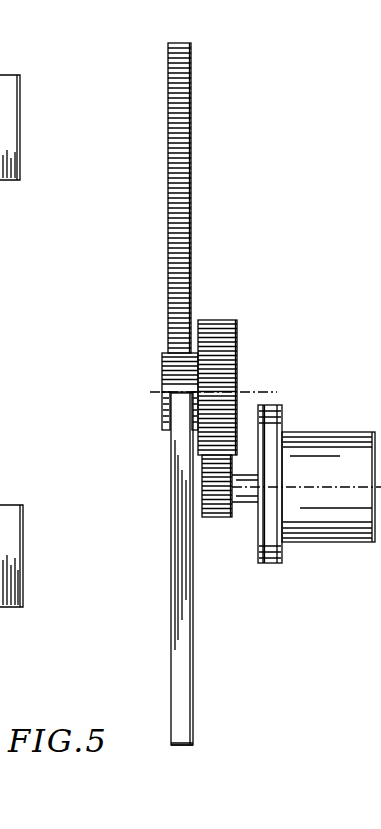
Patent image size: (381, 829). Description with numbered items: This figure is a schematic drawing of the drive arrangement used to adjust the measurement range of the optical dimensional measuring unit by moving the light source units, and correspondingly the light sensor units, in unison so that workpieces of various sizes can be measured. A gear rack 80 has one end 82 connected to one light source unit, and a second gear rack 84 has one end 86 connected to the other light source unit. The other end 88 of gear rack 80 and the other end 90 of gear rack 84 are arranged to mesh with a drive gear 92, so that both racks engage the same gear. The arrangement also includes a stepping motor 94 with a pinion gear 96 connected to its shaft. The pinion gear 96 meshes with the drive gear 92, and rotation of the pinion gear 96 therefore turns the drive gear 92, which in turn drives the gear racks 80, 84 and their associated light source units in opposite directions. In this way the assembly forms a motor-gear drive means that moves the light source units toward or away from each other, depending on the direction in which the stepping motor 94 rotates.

The gear rack 80 is at (235, 246).
The end of gear rack 82 is at (192, 84).
The gear rack 84 is at (197, 659).
The end of gear rack 86 is at (197, 742).
The other end of gear rack 88 is at (168, 343).
The other end of gear rack 90 is at (162, 443).
The drive gear 92 is at (238, 357).
The stepping motor 94 is at (282, 562).
The pinion gear 96 is at (223, 518).